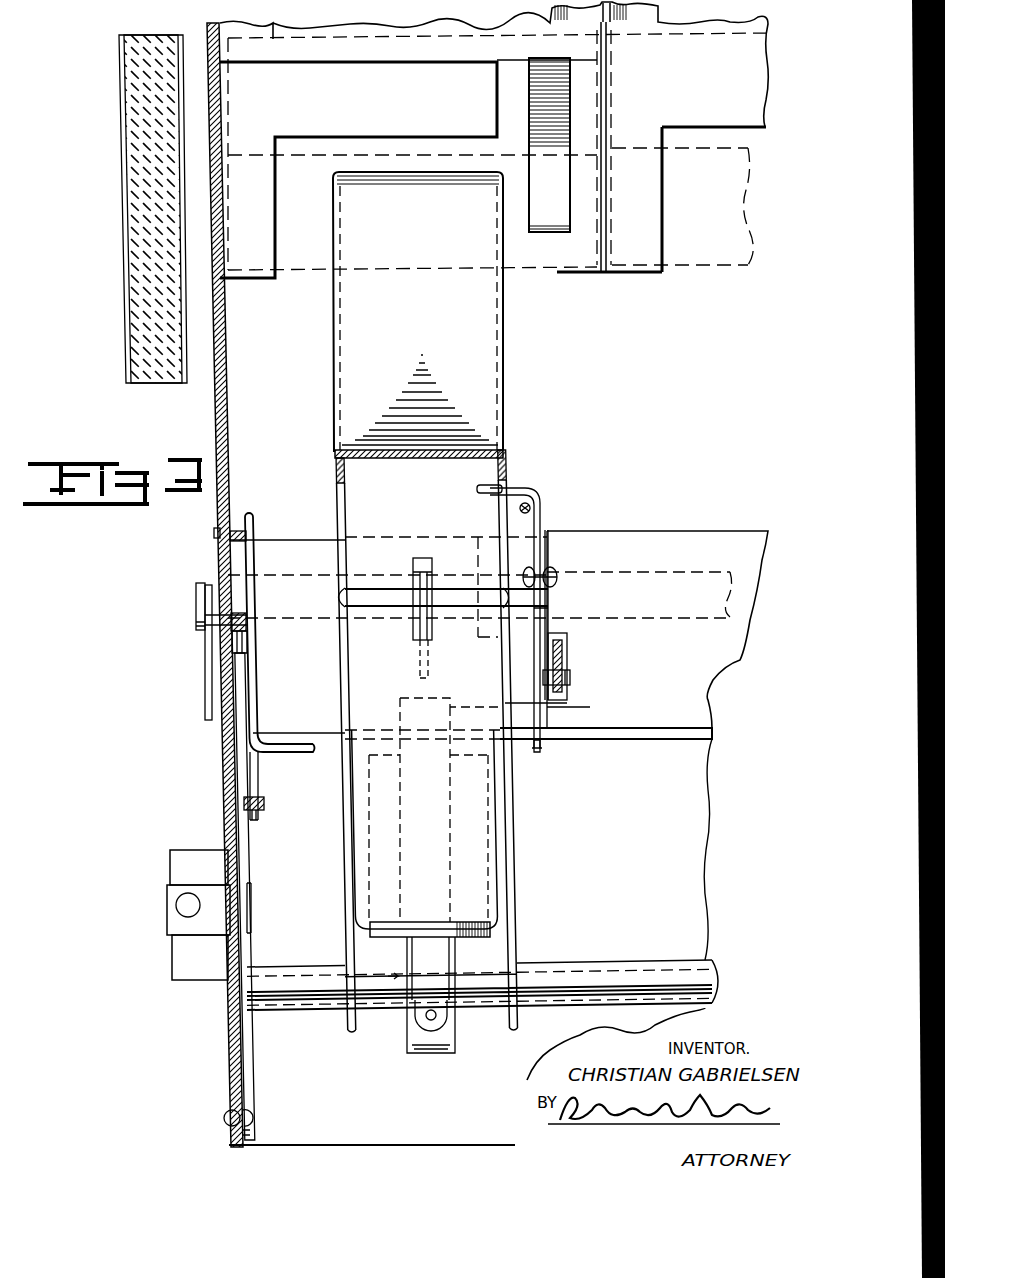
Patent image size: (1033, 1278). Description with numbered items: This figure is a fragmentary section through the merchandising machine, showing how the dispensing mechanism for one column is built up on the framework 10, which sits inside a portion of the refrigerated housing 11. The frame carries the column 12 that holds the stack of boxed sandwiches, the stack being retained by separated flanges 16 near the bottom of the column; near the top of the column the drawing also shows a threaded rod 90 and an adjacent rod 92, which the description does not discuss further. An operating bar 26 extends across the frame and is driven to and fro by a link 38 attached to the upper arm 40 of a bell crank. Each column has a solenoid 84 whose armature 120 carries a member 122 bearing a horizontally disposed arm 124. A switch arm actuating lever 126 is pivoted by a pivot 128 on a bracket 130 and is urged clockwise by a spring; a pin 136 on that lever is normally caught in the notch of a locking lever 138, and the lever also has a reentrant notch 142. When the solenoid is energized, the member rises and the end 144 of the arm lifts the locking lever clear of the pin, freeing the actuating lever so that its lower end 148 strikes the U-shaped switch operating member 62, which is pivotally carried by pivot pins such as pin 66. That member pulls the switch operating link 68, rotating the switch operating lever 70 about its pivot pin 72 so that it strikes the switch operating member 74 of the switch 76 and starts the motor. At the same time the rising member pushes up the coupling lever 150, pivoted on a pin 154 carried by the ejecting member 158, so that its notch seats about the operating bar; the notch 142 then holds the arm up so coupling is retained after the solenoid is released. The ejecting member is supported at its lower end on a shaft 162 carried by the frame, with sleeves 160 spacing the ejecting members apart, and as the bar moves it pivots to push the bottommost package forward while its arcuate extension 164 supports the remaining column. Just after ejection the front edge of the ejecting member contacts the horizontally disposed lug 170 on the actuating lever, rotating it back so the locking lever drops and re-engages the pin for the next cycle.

The framework 10 is at (222, 742).
The refrigerated housing 11 is at (122, 318).
The column 12 is at (353, 60).
The flange 16 is at (256, 283).
The operating bar 26 is at (690, 617).
The link 38 is at (194, 597).
The arm 40 is at (203, 665).
The U-shaped switch operating member 62 is at (666, 740).
The pivot pin 66 is at (218, 537).
The switch operating link 68 is at (242, 784).
The switch operating lever 70 is at (248, 866).
The pivot pin 72 is at (229, 1119).
The switch operating member 74 is at (251, 915).
The switch 76 is at (171, 967).
The solenoid 84 is at (487, 878).
The threaded rod 90 is at (529, 107).
The rod 92 is at (572, 207).
The armature 120 is at (437, 967).
The member 122 is at (400, 718).
The horizontally disposed arm 124 is at (470, 700).
The switch arm actuating lever 126 is at (545, 515).
The pivot 128 is at (556, 581).
The bracket 130 is at (552, 553).
The pin 136 is at (572, 680).
The locking lever 138 is at (568, 652).
The reentrant portion or notch 142 is at (545, 613).
The end of the arm 144 is at (575, 707).
The lower end 148 is at (541, 750).
The coupling lever 150 is at (432, 587).
The pin 154 is at (394, 612).
The ejecting member 158 is at (507, 468).
The sleeve 160 is at (316, 1012).
The shaft 162 is at (388, 1006).
The arcuate extension 164 is at (487, 392).
The horizontally disposed lug 170 is at (480, 490).